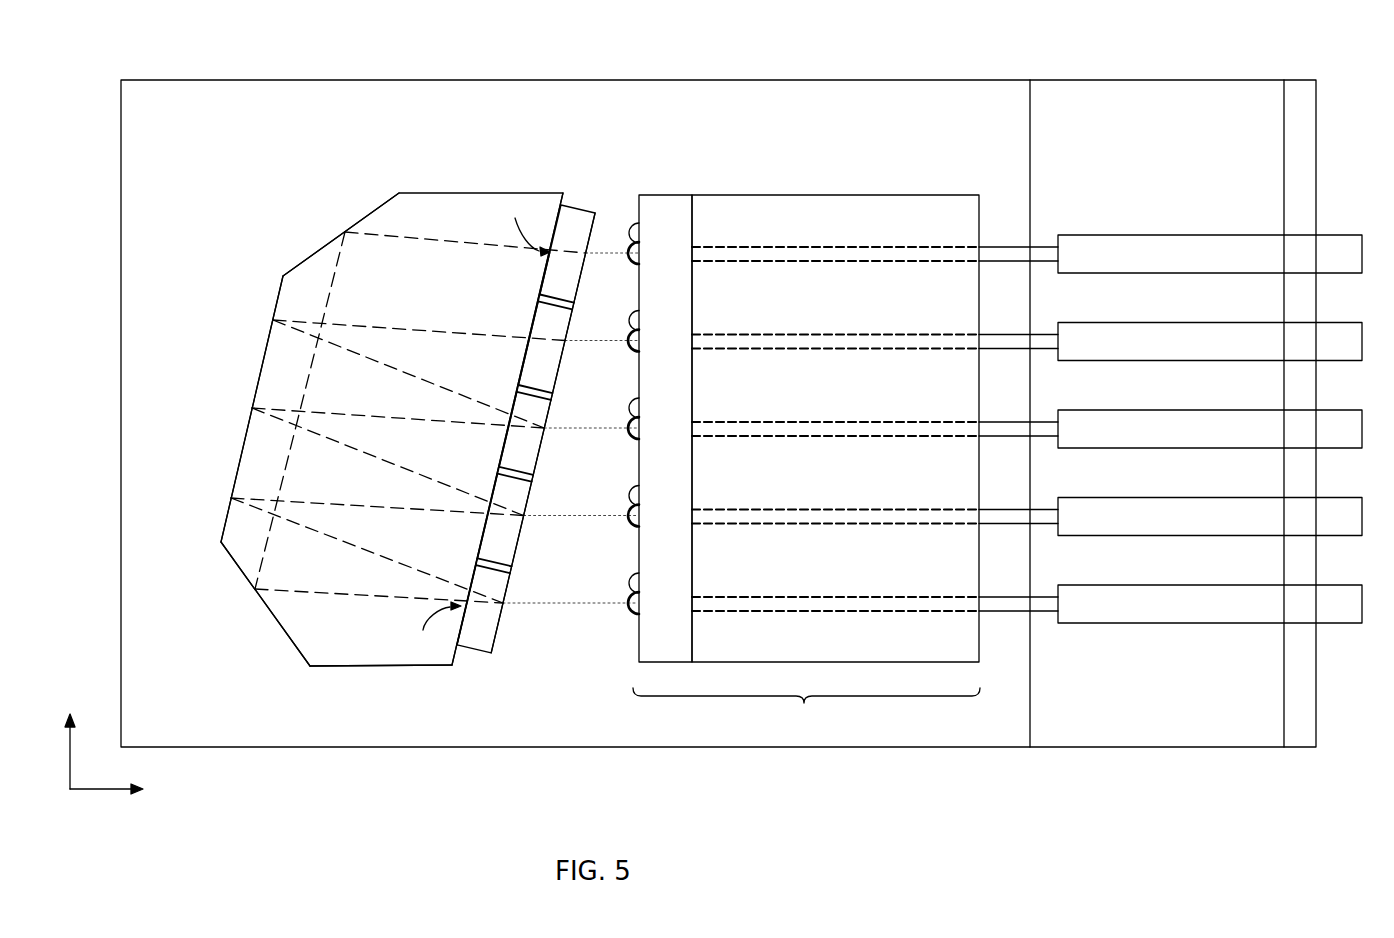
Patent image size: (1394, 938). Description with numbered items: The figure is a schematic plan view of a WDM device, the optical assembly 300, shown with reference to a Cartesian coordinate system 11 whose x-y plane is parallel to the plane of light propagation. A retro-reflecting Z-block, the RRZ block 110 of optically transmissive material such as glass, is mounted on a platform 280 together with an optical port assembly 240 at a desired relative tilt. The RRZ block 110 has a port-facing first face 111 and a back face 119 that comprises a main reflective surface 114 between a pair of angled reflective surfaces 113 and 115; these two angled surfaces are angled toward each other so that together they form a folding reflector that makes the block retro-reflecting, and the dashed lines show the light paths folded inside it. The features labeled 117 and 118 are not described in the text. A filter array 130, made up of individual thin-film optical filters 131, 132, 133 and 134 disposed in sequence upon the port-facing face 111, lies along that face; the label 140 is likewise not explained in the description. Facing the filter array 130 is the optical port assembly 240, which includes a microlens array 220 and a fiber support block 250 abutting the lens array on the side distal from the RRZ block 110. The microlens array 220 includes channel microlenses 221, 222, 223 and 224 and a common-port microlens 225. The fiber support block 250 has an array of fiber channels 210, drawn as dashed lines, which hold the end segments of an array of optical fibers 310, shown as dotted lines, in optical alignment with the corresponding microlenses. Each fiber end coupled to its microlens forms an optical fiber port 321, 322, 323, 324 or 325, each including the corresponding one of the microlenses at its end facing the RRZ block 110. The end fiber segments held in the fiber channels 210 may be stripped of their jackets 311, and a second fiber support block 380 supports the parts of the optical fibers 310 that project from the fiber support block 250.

The optical assembly 300 is at (712, 31).
The platform 280 is at (177, 118).
The second fiber support block 380 is at (1106, 123).
The Cartesian coordinate system 11 is at (60, 806).
The retro-reflecting Z-block 110 is at (414, 413).
The first face 111 is at (530, 287).
The angled reflective surface 113 is at (356, 222).
The main reflective surface 114 is at (255, 349).
The angled reflective surface 115 is at (270, 628).
The exit face 117 is at (562, 193).
The bottom surface 118 is at (452, 662).
The back face 119 is at (270, 216).
The filter array 130 is at (525, 475).
The optical filter 131 is at (497, 627).
The optical filter 132 is at (520, 533).
The optical filter 133 is at (540, 453).
The optical filter 134 is at (523, 343).
The filter array output surface 140 is at (592, 233).
The fiber channel 210 is at (760, 247).
The microlens array 220 is at (658, 195).
The channel microlens 221 is at (634, 606).
The channel microlens 222 is at (634, 518).
The channel microlens 223 is at (634, 431).
The channel microlens 224 is at (634, 344).
The common-port microlens 225 is at (634, 256).
The optical port assembly 240 is at (806, 712).
The fiber support block 250 is at (868, 195).
The optical fiber 310 is at (1045, 247).
The jacket 311 is at (1177, 235).
The optical fiber port 321 is at (715, 597).
The optical fiber port 322 is at (715, 510).
The optical fiber port 323 is at (715, 422).
The optical fiber port 324 is at (715, 334).
The optical fiber port 325 is at (715, 247).